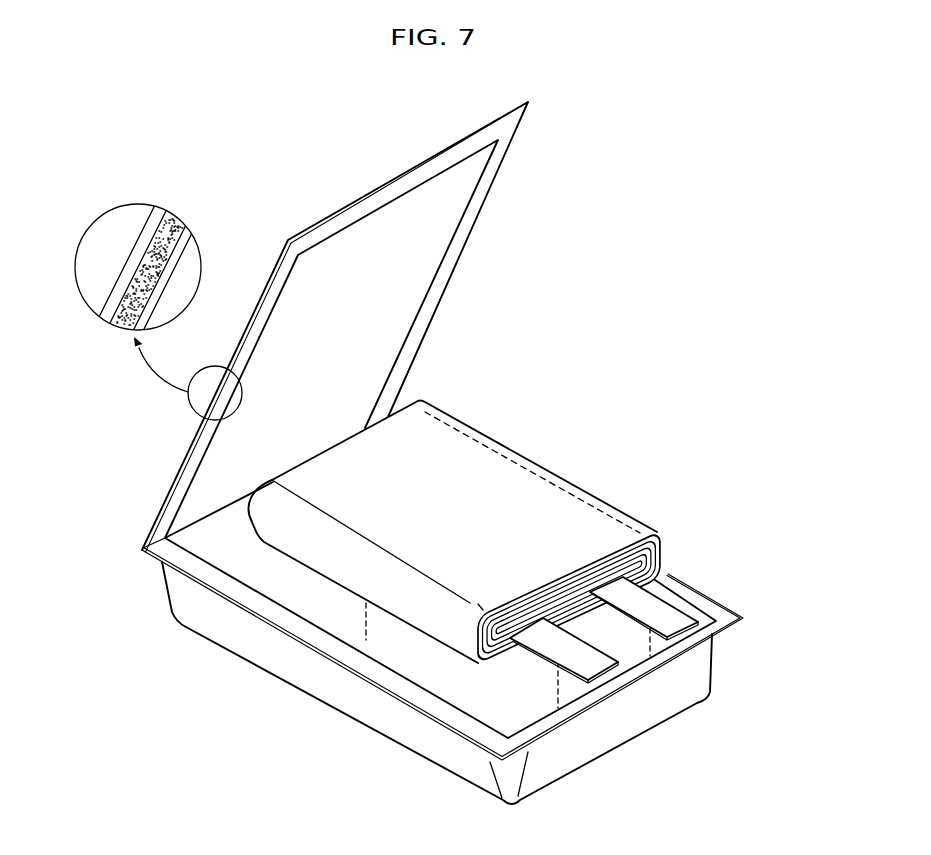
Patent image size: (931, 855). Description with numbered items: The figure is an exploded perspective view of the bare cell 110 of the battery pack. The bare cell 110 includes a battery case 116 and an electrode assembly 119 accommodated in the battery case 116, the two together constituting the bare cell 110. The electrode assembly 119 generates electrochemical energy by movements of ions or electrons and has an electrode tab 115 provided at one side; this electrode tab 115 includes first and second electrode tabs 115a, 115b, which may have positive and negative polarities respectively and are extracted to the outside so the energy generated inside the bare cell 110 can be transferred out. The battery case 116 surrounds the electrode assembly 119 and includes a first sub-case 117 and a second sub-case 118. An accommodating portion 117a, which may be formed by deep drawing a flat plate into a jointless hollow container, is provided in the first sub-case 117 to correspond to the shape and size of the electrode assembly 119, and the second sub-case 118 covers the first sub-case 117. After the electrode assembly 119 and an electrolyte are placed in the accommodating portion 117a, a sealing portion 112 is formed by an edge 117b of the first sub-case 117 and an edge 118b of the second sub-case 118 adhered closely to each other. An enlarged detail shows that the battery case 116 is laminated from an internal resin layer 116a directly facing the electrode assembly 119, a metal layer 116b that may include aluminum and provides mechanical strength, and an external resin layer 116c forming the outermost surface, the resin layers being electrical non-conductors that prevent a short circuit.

The bare cell 110 is at (698, 207).
The sealing portion 112 is at (62, 526).
The electrode tab 115 is at (817, 672).
The first electrode tab 115a is at (719, 628).
The second electrode tab 115b is at (592, 670).
The battery case 116 is at (255, 685).
The internal resin layer 116a is at (180, 228).
The metal layer 116b is at (173, 218).
The external resin layer 116c is at (153, 210).
The first sub-case 117 is at (358, 722).
The accommodating portion 117a is at (488, 693).
The edge of the first sub-case 117b is at (242, 598).
The second sub-case 118 is at (193, 448).
The edge of the second sub-case 118b is at (166, 521).
The electrode assembly 119 is at (560, 462).